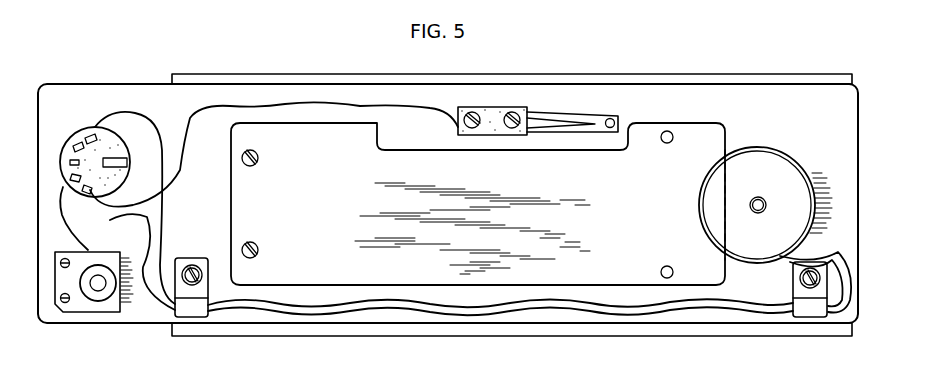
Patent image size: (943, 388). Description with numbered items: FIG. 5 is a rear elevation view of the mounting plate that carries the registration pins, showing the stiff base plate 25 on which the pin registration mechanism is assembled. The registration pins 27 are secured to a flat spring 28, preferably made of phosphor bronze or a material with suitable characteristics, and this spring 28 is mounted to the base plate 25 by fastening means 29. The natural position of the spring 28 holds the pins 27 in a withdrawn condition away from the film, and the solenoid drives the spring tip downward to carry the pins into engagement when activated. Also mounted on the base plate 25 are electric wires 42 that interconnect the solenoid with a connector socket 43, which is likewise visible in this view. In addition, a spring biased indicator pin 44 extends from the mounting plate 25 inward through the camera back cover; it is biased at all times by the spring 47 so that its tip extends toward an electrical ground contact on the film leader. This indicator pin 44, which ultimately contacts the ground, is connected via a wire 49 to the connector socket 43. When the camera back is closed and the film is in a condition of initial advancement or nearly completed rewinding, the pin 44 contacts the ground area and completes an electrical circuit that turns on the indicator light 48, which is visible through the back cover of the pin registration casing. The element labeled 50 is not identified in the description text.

The base plate 25 is at (843, 127).
The registration pins 27 is at (674, 134).
The flat spring 28 is at (443, 268).
The fastening means 29 is at (259, 163).
The electric wires 42 is at (577, 303).
The connector socket 43 is at (78, 137).
The indicator pin 44 is at (609, 118).
The spring 47 is at (562, 113).
The indicator light 48 is at (103, 302).
The wire 49 is at (281, 104).
The wire 50 is at (60, 226).